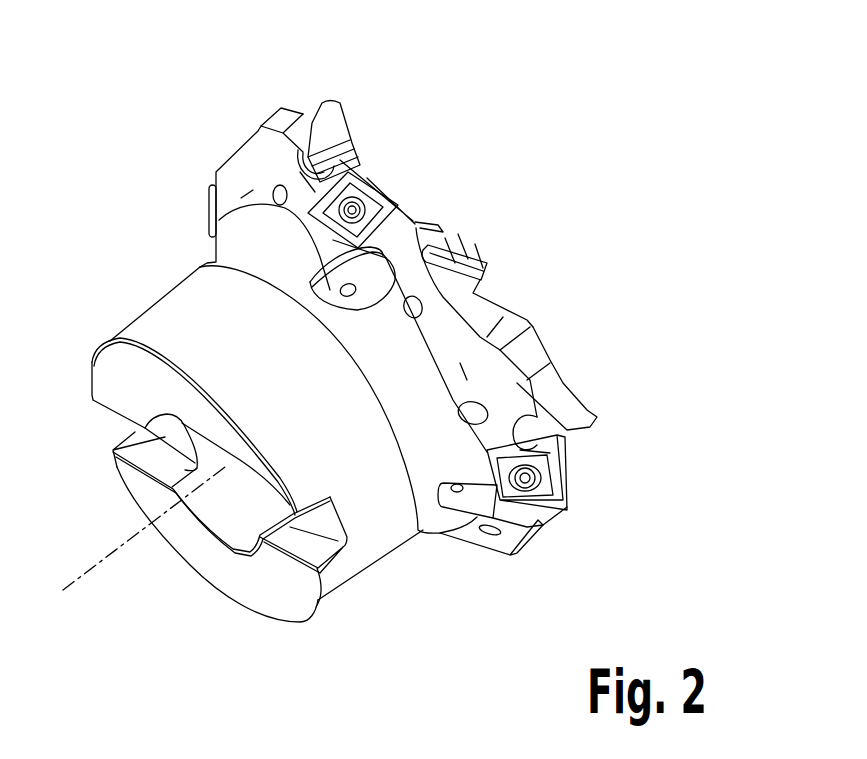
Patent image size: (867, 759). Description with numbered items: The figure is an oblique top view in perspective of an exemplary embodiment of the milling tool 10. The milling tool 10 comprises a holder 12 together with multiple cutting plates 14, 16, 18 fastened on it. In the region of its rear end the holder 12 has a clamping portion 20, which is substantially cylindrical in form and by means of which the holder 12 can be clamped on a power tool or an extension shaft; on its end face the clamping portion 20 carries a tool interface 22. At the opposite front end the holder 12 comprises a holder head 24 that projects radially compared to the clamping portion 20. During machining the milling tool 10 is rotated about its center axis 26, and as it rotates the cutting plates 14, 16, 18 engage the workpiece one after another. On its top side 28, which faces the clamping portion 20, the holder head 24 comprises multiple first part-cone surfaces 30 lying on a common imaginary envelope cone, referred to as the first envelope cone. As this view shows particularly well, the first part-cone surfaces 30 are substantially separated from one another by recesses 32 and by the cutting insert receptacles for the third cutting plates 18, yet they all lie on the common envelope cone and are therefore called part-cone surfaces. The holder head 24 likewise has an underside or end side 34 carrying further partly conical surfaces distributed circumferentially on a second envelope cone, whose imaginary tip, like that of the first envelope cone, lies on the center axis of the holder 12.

The milling tool 10 is at (636, 190).
The holder 12 is at (183, 277).
The cutting plate 14 is at (340, 128).
The cutting plate 16 is at (468, 250).
The third cutting plate 18 is at (392, 178).
The clamping portion 20 is at (367, 550).
The tool interface 22 is at (305, 530).
The holder head 24 is at (523, 348).
The center axis 26 is at (87, 573).
The top side 28 is at (253, 192).
The first part-cone surfaces 30 is at (460, 363).
The recesses 32 is at (372, 298).
The end side 34 is at (547, 289).